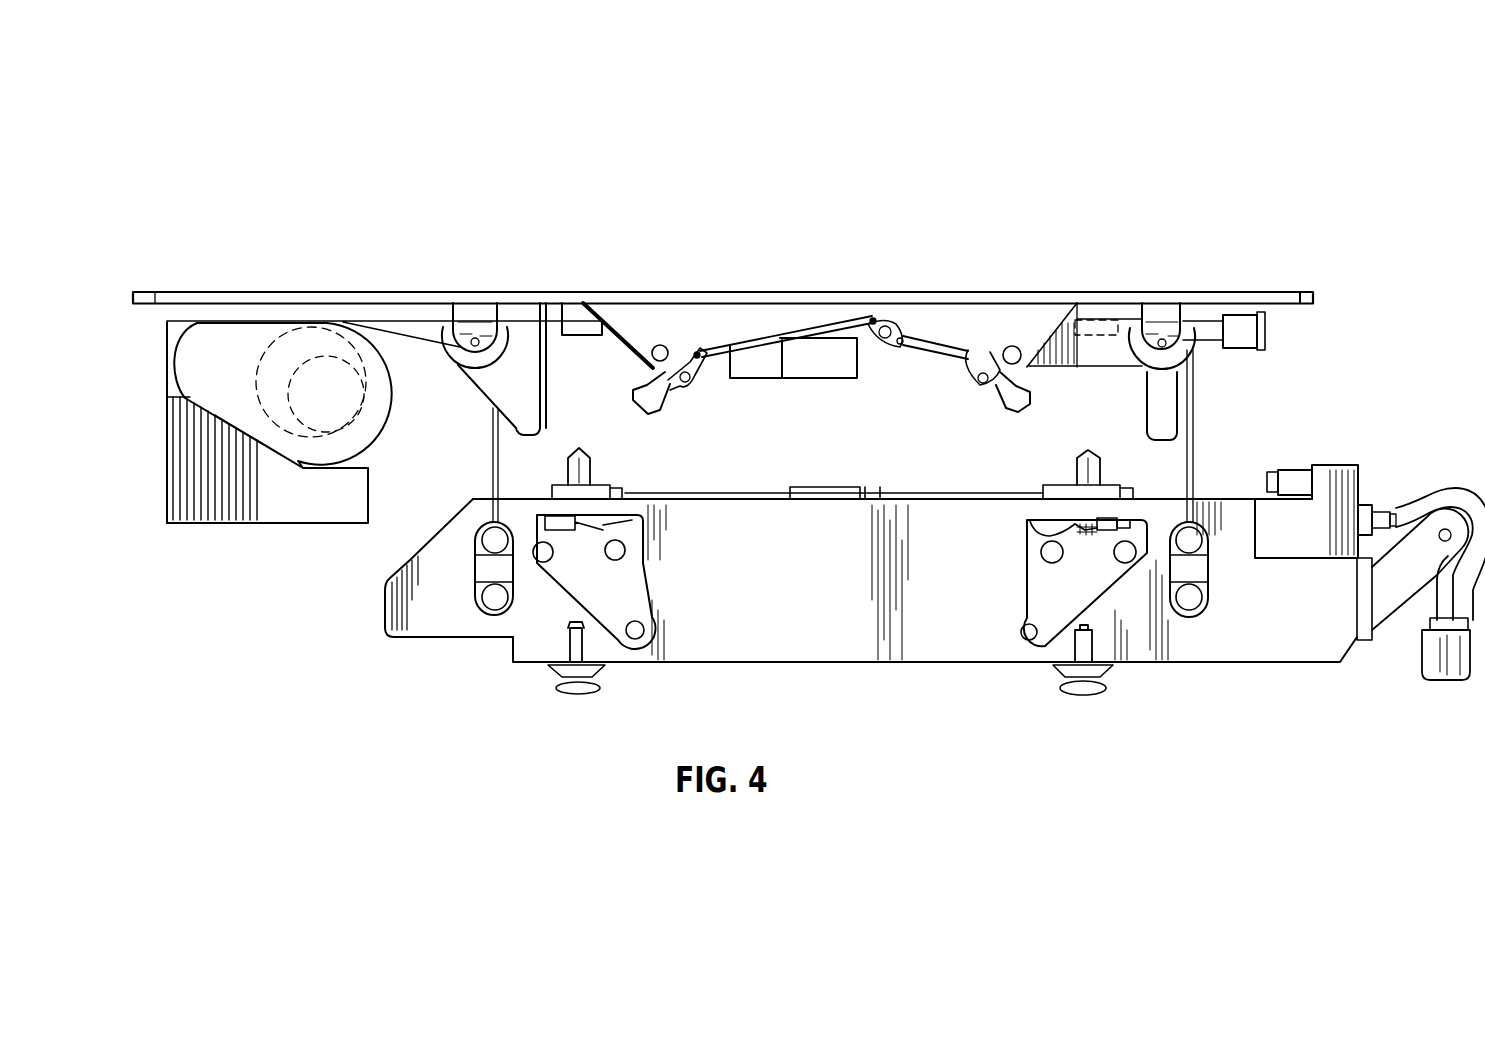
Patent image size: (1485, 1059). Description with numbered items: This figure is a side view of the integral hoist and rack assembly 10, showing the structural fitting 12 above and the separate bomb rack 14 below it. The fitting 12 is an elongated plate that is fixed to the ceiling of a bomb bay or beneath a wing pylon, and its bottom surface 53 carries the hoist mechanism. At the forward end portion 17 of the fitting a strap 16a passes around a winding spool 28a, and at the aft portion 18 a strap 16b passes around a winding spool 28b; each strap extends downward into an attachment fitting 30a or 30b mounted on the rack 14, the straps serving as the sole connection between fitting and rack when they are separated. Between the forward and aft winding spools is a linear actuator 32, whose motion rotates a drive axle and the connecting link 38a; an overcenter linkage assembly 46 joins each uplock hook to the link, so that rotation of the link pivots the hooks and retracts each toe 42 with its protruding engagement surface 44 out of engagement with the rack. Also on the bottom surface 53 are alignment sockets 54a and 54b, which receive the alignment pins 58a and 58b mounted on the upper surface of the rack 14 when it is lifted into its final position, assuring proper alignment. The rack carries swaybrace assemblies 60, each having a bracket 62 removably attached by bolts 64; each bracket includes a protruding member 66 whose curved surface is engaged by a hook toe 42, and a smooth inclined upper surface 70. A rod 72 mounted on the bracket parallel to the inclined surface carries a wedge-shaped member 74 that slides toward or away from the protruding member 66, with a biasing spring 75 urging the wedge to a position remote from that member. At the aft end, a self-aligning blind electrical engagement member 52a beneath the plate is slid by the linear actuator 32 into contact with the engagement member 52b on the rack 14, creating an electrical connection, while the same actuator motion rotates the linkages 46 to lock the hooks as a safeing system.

The integral hoist and rack assembly 10 is at (556, 172).
The structural fitting 12 is at (968, 268).
The bomb rack 14 is at (885, 682).
The strap 16a is at (494, 462).
The strap 16b is at (1197, 418).
The forward end portion 17 is at (268, 290).
The aft portion 18 is at (1111, 300).
The winding spool 28a is at (458, 345).
The winding spool 28b is at (1194, 357).
The attachment fitting 30a is at (488, 570).
The attachment fitting 30b is at (1198, 568).
The linear actuator 32 is at (857, 352).
The connecting link 38a is at (876, 316).
The toe 42 is at (1018, 403).
The protruding engagement surface 44 is at (1037, 370).
The overcenter linkage assembly 46 is at (784, 368).
The blind electrical engagement member 52a is at (1246, 317).
The electrical engagement member 52b is at (1296, 480).
The bottom surface 53 is at (1285, 313).
The alignment socket 54a is at (565, 300).
The alignment socket 54b is at (1090, 300).
The alignment pin 58a is at (590, 486).
The alignment pin 58b is at (1074, 472).
The swaybrace assembly 60 is at (965, 549).
The bracket 62 is at (612, 618).
The bolt 64 is at (550, 556).
The protruding member 66 is at (612, 525).
The inclined upper surface 70 is at (1086, 535).
The rod 72 is at (1128, 520).
The wedge-shaped member 74 is at (1104, 520).
The biasing spring 75 is at (1094, 522).